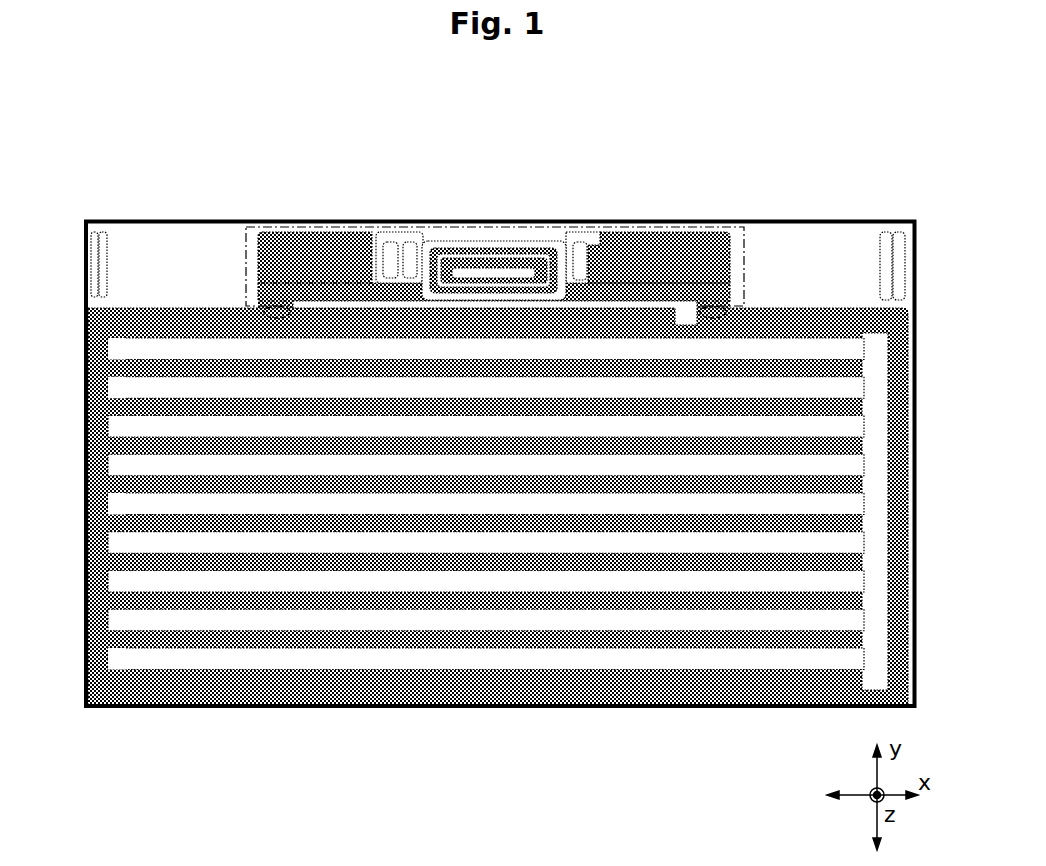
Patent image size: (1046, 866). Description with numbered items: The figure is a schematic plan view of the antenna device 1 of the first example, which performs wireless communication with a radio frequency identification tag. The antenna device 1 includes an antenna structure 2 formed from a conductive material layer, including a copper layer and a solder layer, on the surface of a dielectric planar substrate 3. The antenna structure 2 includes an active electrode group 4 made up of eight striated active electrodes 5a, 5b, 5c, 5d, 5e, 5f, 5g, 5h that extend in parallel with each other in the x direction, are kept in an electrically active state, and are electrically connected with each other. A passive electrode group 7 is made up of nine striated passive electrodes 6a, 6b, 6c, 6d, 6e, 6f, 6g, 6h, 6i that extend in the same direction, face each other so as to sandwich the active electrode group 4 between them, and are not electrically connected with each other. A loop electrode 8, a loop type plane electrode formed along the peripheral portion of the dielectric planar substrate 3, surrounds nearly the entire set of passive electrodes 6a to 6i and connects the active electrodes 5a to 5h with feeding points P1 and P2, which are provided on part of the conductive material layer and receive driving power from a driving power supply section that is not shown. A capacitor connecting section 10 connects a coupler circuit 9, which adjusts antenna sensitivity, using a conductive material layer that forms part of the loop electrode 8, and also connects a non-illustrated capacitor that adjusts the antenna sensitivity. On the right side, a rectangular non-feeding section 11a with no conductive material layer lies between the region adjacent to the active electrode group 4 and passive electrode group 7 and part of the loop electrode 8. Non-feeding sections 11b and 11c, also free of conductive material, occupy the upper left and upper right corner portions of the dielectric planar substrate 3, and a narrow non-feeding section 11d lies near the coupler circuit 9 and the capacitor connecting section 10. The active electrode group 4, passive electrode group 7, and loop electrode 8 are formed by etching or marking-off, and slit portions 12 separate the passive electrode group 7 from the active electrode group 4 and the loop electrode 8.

The antenna device 1 is at (902, 198).
The antenna structure 2 is at (751, 273).
The dielectric planar substrate 3 is at (86, 246).
The active electrode group 4 is at (625, 640).
The active electrode 5a is at (115, 367).
The active electrode 5b is at (115, 414).
The active electrode 5c is at (114, 446).
The active electrode 5d is at (114, 484).
The active electrode 5e is at (114, 524).
The active electrode 5f is at (114, 562).
The active electrode 5g is at (114, 601).
The active electrode 5h is at (114, 676).
The passive electrode 6a is at (846, 350).
The passive electrode 6b is at (846, 388).
The passive electrode 6c is at (846, 427).
The passive electrode 6d is at (846, 466).
The passive electrode 6e is at (846, 505).
The passive electrode 6f is at (846, 544).
The passive electrode 6g is at (846, 583).
The passive electrode 6h is at (846, 622).
The passive electrode 6i is at (846, 660).
The passive electrode group 7 is at (203, 343).
The loop electrode 8 is at (177, 688).
The coupler circuit 9 is at (537, 223).
The capacitor connecting section 10 is at (404, 224).
The non-feeding section 11a is at (870, 665).
The non-feeding section 11b is at (137, 258).
The non-feeding section 11c is at (829, 250).
The non-feeding section 11d is at (337, 302).
The slit portion 12 is at (107, 338).
The feeding point P1 is at (277, 305).
The feeding point P2 is at (713, 305).